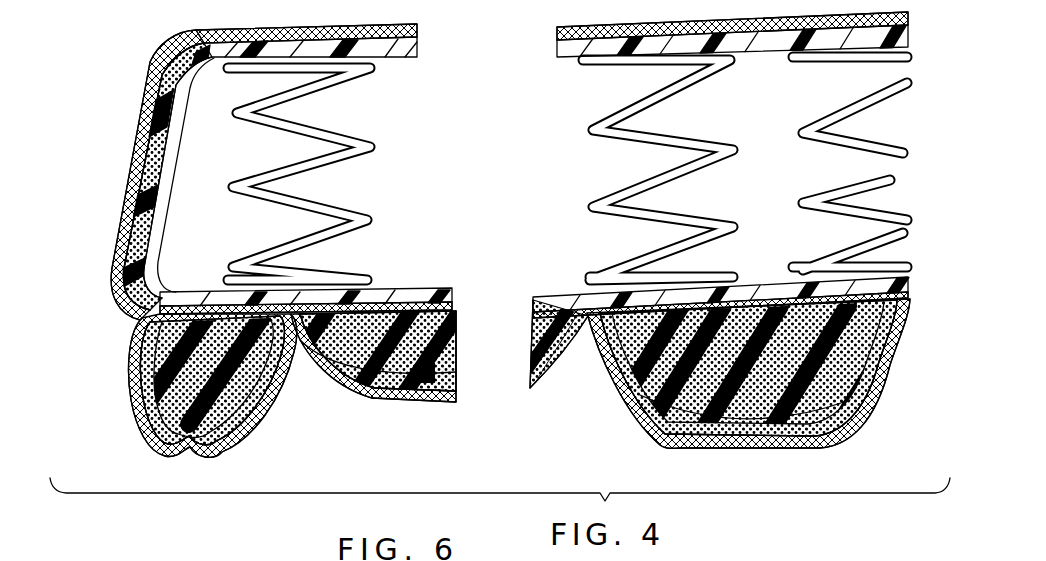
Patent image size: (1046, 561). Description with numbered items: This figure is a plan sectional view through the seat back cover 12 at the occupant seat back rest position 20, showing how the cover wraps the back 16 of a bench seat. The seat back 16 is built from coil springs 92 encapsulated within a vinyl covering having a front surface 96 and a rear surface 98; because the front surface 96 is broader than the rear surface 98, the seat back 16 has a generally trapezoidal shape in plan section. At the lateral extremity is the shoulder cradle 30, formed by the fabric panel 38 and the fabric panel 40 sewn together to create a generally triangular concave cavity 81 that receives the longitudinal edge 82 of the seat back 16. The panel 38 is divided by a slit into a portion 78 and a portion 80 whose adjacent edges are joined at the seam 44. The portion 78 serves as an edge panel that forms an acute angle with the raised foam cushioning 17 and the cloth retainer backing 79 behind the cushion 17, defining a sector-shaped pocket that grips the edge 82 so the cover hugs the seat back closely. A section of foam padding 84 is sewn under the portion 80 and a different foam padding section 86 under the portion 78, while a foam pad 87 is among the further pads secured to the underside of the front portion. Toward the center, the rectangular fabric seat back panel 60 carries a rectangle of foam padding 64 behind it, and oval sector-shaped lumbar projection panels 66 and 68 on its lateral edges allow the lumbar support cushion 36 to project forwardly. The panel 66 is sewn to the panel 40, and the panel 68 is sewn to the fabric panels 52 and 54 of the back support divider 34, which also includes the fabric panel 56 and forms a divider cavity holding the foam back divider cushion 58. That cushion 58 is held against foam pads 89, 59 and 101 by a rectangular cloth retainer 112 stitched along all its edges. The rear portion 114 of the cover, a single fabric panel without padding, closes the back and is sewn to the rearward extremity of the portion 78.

The seat back cover 12 is at (352, 405).
The back 16 is at (140, 127).
The raised foam cushioning 17 is at (210, 412).
The occupant seat back rest position 20 is at (460, 418).
The shoulder cradle 30 is at (219, 454).
The back support divider 34 is at (852, 438).
The lumbar support cushion 36 is at (410, 405).
The fabric panel 38 is at (123, 407).
The fabric panel 40 is at (260, 405).
The seam 44 is at (130, 320).
The fabric panel 52 is at (672, 452).
The fabric panel 54 is at (618, 388).
The fabric panel 56 is at (856, 415).
The foam back divider cushion 58 is at (762, 455).
The foam pad 59 is at (740, 458).
The fabric seat back panel 60 is at (365, 398).
The foam padding 64 is at (456, 370).
The lumbar projection panel 66 is at (312, 368).
The lumbar projection panel 68 is at (570, 375).
The portion 78 is at (127, 163).
The cloth retainer backing 79 is at (172, 285).
The portion 80 is at (130, 385).
The concave cavity 81 is at (115, 288).
The longitudinal edge 82 is at (186, 106).
The foam padding 84 is at (130, 357).
The foam padding section 86 is at (167, 45).
The foam pad 87 is at (247, 440).
The foam pad 89 is at (645, 410).
The coil spring 92 is at (315, 200).
The front surface 96 is at (858, 396).
The rear surface 98 is at (793, 12).
The foam pad 101 is at (880, 365).
The cloth retainer 112 is at (742, 295).
The rear portion 114 is at (305, 28).